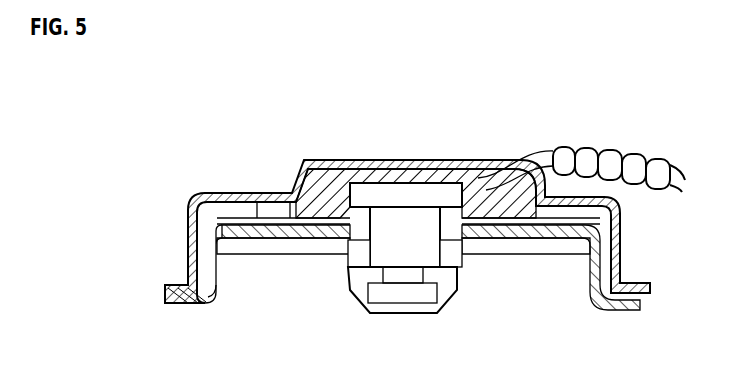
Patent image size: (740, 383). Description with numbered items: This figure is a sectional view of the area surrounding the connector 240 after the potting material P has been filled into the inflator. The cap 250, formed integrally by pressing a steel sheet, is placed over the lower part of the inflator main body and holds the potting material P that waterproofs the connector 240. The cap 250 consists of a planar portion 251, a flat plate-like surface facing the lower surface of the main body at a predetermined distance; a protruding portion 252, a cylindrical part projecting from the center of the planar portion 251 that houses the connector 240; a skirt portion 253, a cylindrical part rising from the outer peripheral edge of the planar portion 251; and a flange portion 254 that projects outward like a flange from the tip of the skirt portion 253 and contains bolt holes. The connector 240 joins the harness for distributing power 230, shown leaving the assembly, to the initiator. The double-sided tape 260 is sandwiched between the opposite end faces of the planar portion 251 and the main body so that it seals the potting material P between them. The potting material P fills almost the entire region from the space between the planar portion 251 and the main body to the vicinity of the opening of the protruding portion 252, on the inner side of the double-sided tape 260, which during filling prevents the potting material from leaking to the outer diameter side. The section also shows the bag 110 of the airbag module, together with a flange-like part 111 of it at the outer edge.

The cap 250 is at (178, 164).
The planar portion 251 is at (257, 198).
The protruding portion 252 is at (302, 164).
The skirt portion 253 is at (190, 230).
The flange portion 254 is at (183, 282).
The base flange 111 is at (180, 297).
The bag 110 is at (547, 233).
The double-sided tape 260 is at (273, 212).
The connector 240 is at (368, 175).
The potting material P is at (495, 208).
The harness for distributing power 230 is at (585, 148).